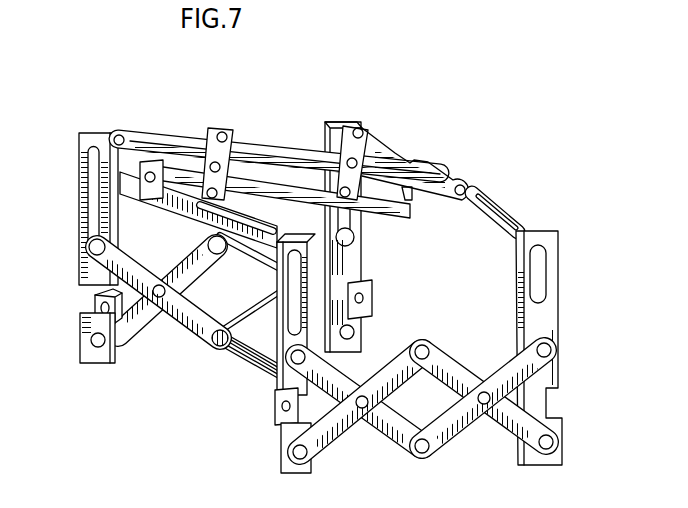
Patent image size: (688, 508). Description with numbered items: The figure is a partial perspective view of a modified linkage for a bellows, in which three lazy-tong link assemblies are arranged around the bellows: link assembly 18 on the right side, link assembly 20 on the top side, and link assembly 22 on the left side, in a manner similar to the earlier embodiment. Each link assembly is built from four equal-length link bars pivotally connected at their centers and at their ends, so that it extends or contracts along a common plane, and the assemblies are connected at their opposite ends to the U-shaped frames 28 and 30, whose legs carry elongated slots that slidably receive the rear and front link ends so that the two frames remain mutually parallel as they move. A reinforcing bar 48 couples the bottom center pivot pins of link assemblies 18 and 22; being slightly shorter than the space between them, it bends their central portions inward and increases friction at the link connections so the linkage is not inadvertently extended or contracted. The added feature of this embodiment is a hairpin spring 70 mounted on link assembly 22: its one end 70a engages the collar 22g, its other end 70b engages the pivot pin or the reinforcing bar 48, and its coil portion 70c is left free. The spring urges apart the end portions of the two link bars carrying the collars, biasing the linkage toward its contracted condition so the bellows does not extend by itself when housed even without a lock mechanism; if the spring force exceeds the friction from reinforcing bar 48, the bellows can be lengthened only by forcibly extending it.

The U-shaped frame 30 is at (95, 137).
The link assembly 20 is at (247, 130).
The U-shaped frame 28 is at (537, 226).
The collar 22g is at (211, 233).
The end of hairpin spring 70a is at (208, 252).
The hairpin spring 70 is at (253, 271).
The coil portion 70c is at (214, 332).
The end of hairpin spring 70b is at (236, 342).
The link assembly 22 is at (129, 339).
The reinforcing bar 48 is at (258, 368).
The link assembly 18 is at (465, 432).